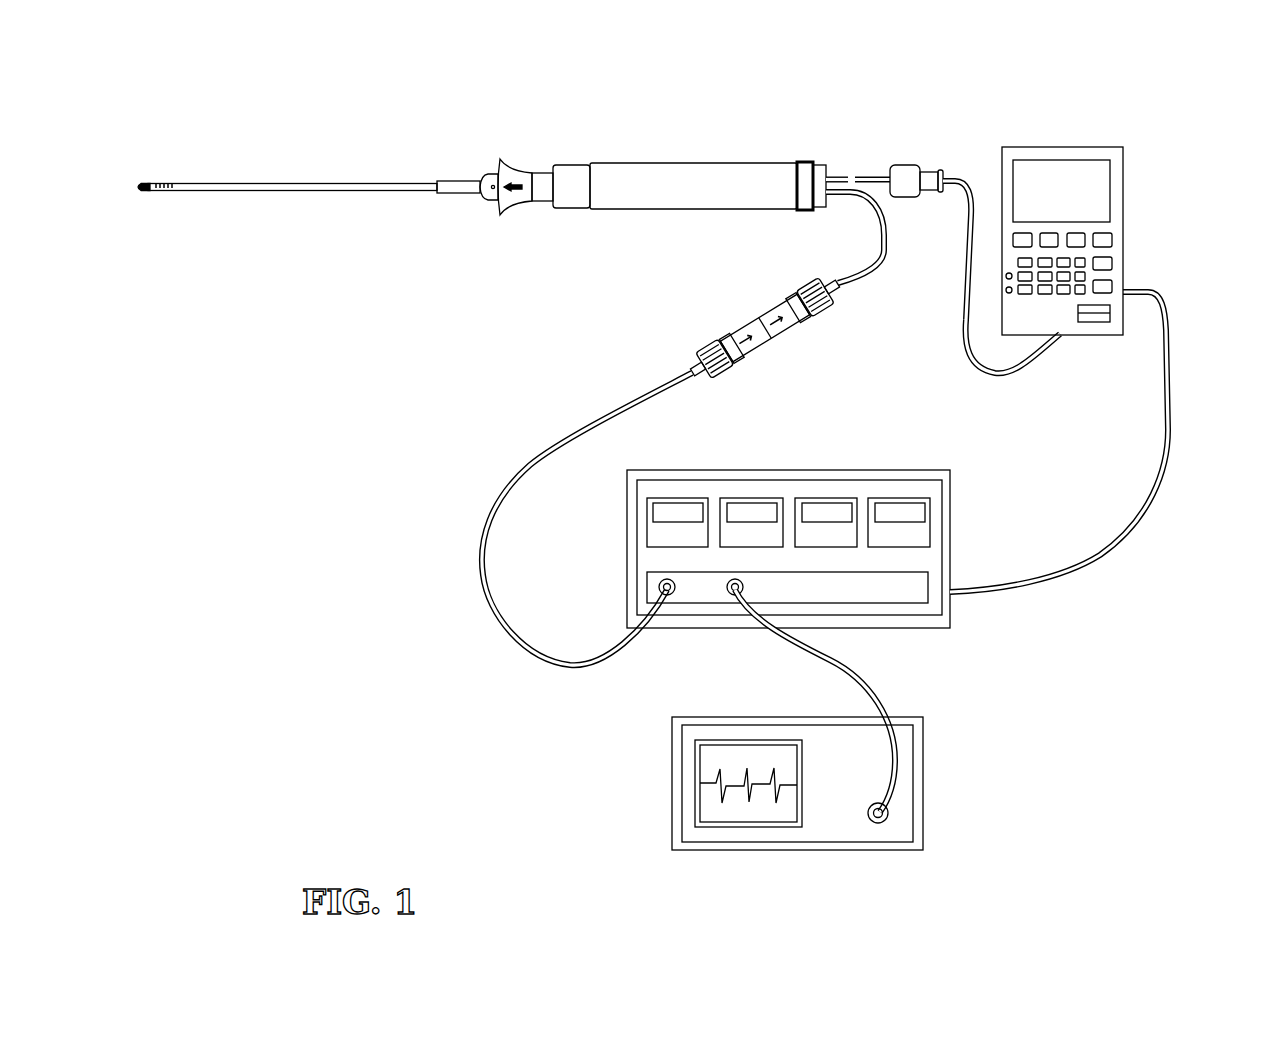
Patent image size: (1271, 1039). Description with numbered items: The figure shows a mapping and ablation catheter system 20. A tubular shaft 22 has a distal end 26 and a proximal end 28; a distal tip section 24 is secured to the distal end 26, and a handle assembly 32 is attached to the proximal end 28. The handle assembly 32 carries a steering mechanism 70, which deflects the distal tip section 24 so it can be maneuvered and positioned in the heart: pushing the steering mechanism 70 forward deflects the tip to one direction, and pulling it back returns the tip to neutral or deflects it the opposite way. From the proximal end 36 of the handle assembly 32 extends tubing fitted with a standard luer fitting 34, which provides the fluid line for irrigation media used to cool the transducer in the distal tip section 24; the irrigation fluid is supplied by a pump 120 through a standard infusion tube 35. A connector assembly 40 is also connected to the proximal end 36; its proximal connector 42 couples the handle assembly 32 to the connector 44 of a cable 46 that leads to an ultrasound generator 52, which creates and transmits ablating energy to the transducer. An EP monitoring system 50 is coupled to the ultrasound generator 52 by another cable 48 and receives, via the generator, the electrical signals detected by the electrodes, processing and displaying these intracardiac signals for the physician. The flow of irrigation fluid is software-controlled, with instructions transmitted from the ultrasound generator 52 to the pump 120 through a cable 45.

The catheter system 20 is at (338, 318).
The tubular shaft 22 is at (297, 183).
The distal tip section 24 is at (147, 178).
The distal end 26 is at (170, 200).
The proximal end 28 is at (460, 182).
The handle assembly 32 is at (655, 175).
The luer fitting 34 is at (912, 170).
The infusion tube 35 is at (990, 374).
The proximal end of handle assembly 36 is at (818, 177).
The connector assembly 40 is at (777, 294).
The proximal connector 42 is at (815, 297).
The connector 44 is at (715, 358).
The cable 45 is at (1173, 462).
The cable 46 is at (567, 437).
The cable 48 is at (867, 682).
The EP monitoring system 50 is at (923, 793).
The ultrasound generator 52 is at (950, 537).
The steering mechanism 70 is at (515, 175).
The pump 120 is at (1060, 157).